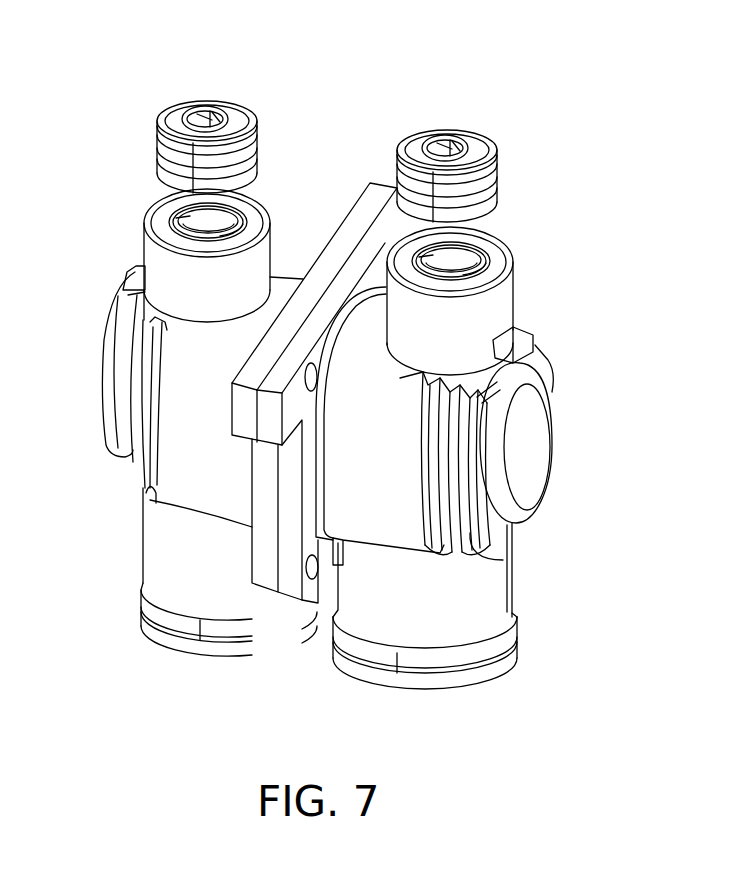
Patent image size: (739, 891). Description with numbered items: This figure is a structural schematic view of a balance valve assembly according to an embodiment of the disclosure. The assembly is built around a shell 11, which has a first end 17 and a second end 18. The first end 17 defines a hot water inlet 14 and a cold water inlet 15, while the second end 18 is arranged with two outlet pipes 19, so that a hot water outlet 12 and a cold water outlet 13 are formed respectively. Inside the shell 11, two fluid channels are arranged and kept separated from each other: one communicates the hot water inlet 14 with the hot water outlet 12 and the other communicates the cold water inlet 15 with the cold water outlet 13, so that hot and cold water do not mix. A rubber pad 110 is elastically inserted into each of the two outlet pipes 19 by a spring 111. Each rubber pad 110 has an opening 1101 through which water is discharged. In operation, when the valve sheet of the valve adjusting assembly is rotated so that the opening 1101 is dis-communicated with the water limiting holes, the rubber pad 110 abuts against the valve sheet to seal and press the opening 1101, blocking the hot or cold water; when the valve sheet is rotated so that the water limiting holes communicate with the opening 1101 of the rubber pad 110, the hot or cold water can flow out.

The shell 11 is at (163, 421).
The rubber pad 110 is at (497, 156).
The opening 1101 is at (462, 141).
The spring 111 is at (488, 254).
The hot water outlet 12 is at (192, 110).
The cold water outlet 13 is at (436, 142).
The hot water inlet 14 is at (194, 645).
The cold water inlet 15 is at (427, 680).
The first end 17 is at (180, 553).
The second end 18 is at (144, 241).
The outlet pipes 19 is at (385, 270).